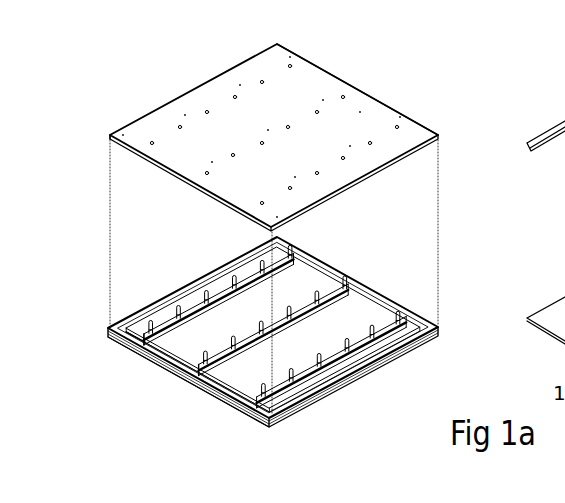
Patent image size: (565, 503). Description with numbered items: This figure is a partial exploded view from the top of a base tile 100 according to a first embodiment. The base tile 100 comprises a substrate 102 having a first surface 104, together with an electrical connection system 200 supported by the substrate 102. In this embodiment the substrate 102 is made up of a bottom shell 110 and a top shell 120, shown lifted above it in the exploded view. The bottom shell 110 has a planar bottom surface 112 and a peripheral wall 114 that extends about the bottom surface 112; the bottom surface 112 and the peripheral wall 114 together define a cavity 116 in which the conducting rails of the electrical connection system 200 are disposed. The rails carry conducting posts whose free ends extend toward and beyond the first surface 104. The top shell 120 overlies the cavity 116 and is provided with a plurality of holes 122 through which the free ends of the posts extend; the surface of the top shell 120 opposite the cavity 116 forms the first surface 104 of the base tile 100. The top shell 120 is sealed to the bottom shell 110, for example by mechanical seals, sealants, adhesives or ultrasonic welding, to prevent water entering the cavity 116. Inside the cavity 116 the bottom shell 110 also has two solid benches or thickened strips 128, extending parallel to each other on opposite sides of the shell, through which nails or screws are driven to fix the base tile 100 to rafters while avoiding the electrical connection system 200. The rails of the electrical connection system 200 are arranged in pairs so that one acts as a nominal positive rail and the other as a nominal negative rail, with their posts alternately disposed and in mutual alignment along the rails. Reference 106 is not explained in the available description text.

The base tile 100 is at (88, 90).
The substrate 102 is at (172, 325).
The first surface 104 is at (293, 95).
The rail end 106 is at (185, 378).
The bottom shell 110 is at (106, 358).
The bottom surface 112 is at (252, 383).
The peripheral wall 114 is at (398, 305).
The cavity 116 is at (238, 373).
The top shell 120 is at (399, 100).
The holes 122 is at (262, 142).
The strips 128 is at (197, 285).
The electrical connection system 200 is at (372, 312).